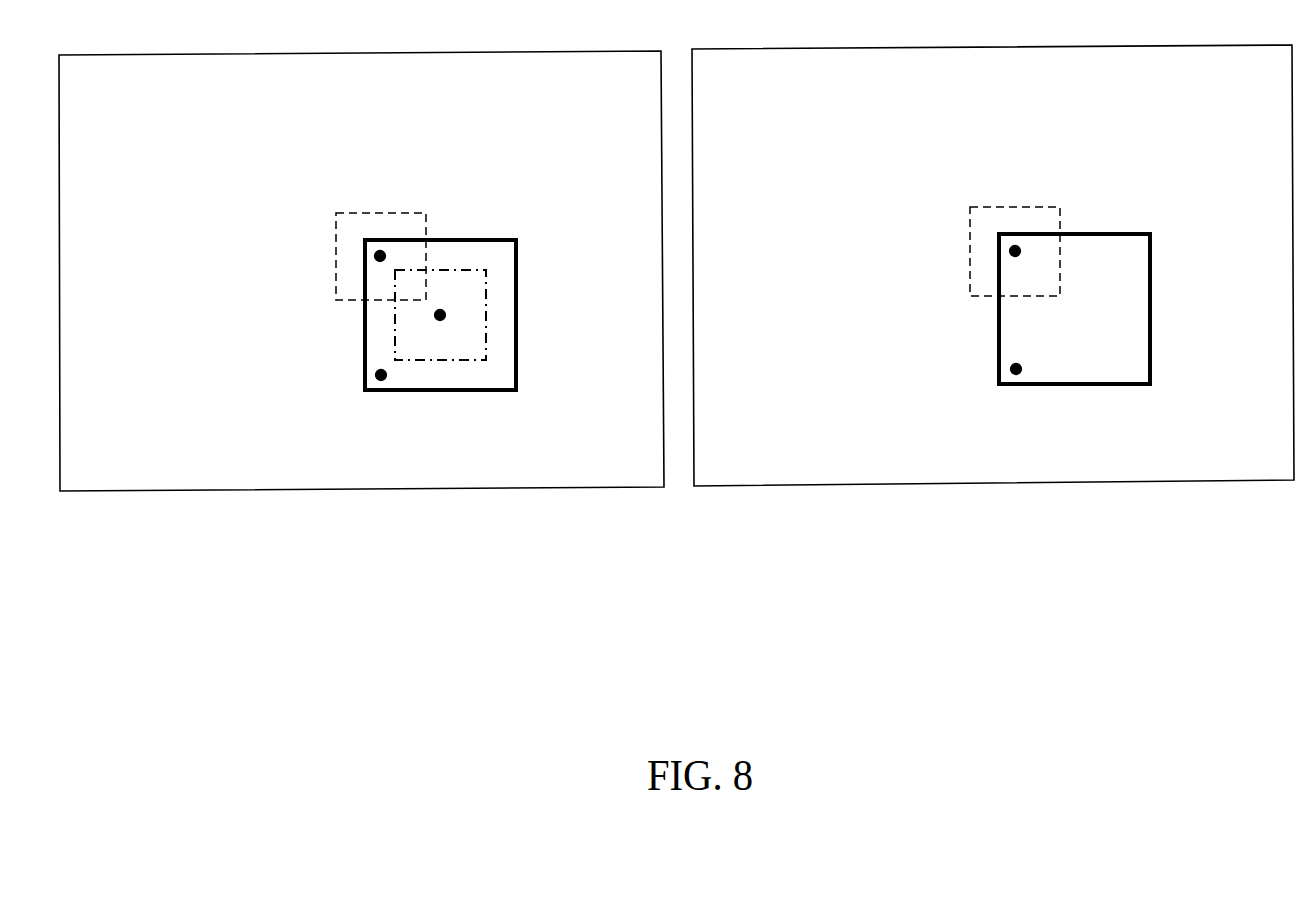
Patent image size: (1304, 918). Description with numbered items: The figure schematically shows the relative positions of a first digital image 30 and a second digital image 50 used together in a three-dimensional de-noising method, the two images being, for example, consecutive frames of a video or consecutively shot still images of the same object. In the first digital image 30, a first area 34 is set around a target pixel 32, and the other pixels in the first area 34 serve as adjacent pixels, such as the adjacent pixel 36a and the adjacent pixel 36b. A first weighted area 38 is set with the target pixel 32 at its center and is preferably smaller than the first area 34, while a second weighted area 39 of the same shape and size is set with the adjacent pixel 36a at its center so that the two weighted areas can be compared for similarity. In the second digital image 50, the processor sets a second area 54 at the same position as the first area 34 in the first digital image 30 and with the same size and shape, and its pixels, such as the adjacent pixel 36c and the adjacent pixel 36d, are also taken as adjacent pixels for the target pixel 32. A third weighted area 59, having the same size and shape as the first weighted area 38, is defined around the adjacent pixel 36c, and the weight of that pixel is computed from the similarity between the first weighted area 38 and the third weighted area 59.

The first digital image 30 is at (219, 490).
The target pixel 32 is at (440, 315).
The first area 34 is at (402, 391).
The adjacent pixel 36a is at (380, 256).
The adjacent pixel 36b is at (381, 375).
The first weighted area 38 is at (470, 361).
The second weighted area 39 is at (366, 213).
The second digital image 50 is at (852, 486).
The second area 54 is at (1033, 386).
The adjacent pixel 36c is at (1015, 251).
The adjacent pixel 36d is at (1016, 369).
The third weighted area 59 is at (1000, 207).